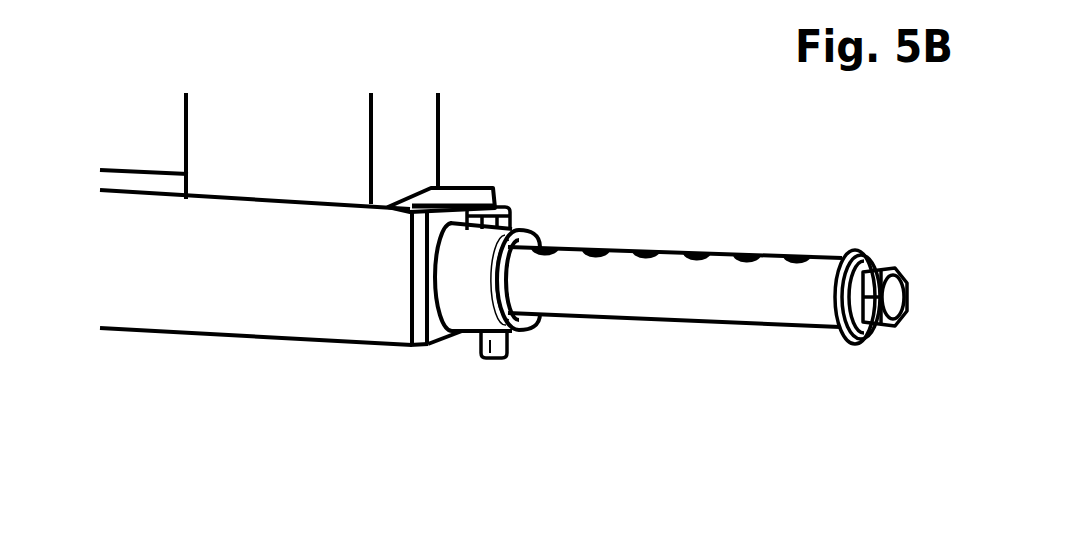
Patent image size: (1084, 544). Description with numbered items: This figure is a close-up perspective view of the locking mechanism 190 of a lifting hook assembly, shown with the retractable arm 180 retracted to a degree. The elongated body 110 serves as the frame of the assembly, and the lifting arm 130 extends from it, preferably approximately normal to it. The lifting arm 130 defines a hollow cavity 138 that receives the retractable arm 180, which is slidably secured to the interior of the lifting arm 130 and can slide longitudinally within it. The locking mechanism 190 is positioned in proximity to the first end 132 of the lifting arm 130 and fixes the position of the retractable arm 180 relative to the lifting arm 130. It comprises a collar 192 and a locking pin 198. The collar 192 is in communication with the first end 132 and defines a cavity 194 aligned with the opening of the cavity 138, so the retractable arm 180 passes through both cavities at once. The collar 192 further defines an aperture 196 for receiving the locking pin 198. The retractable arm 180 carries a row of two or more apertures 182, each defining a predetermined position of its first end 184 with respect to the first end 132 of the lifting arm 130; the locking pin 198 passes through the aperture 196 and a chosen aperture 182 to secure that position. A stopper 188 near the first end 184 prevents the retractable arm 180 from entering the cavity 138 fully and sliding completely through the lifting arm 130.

The elongated body 110 is at (222, 132).
The lifting arm 130 is at (185, 293).
The first end of the lifting arm 132 is at (442, 323).
The hollow cavity 138 is at (552, 318).
The retractable arm 180 is at (680, 298).
The apertures 182 is at (797, 255).
The first end of the retractable arm 184 is at (832, 268).
The stopper 188 is at (848, 343).
The locking mechanism 190 is at (515, 362).
The collar 192 is at (467, 302).
The cavity of the collar 194 is at (528, 237).
The aperture of the collar 196 is at (510, 218).
The locking pin 198 is at (485, 362).